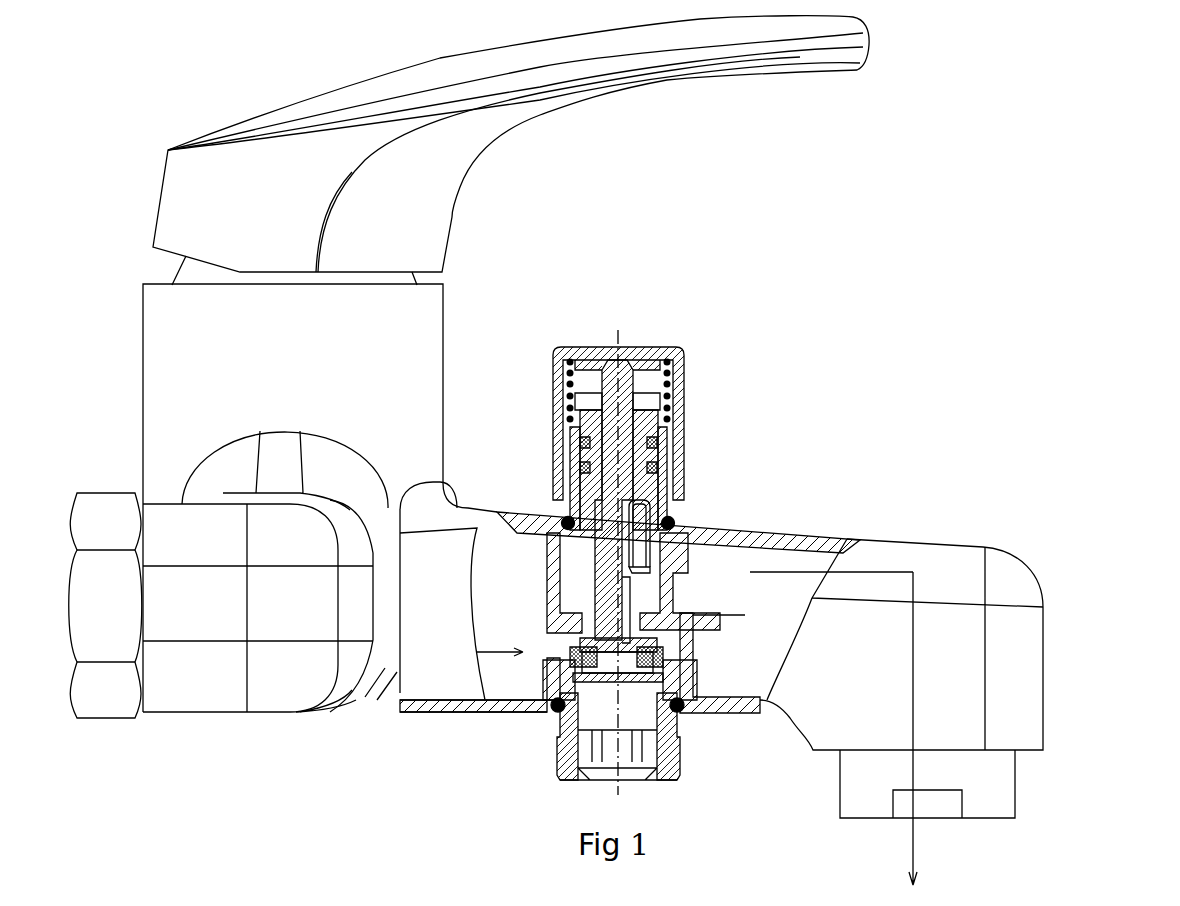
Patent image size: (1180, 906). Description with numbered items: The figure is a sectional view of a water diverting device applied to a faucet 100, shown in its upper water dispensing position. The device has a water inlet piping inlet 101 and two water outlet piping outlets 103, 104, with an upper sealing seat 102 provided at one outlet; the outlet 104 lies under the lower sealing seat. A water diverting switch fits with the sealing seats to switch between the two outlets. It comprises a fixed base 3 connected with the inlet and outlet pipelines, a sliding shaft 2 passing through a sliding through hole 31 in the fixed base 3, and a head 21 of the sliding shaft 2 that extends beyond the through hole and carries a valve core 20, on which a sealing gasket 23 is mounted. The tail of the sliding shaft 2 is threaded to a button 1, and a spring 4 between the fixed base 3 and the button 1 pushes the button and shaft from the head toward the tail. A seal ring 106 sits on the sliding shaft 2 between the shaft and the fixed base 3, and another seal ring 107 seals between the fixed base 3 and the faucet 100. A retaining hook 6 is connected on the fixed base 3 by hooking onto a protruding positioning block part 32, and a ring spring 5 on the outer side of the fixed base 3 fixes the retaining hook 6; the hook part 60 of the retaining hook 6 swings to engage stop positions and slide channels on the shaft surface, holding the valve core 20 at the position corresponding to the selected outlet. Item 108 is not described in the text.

The button 1 is at (681, 374).
The sliding shaft 2 is at (681, 430).
The fixed base 3 is at (681, 490).
The spring 4 is at (681, 401).
The ring spring 5 is at (595, 535).
The retaining hook 6 is at (675, 521).
The valve core 20 is at (550, 715).
The head of the sliding shaft 21 is at (690, 708).
The sealing gasket 23 is at (548, 683).
The sliding through hole 31 is at (570, 457).
The protruding positioning block part 32 is at (575, 500).
The hook part 60 is at (665, 487).
The faucet 100 is at (1045, 628).
The water inlet piping inlet 101 is at (545, 648).
The upper sealing seat 102 is at (690, 612).
The water outlet piping outlet 103 is at (672, 590).
The water outlet piping outlet 104 is at (556, 743).
The seal ring 106 is at (681, 460).
The seal ring 107 is at (567, 523).
The lower connector 108 is at (700, 768).